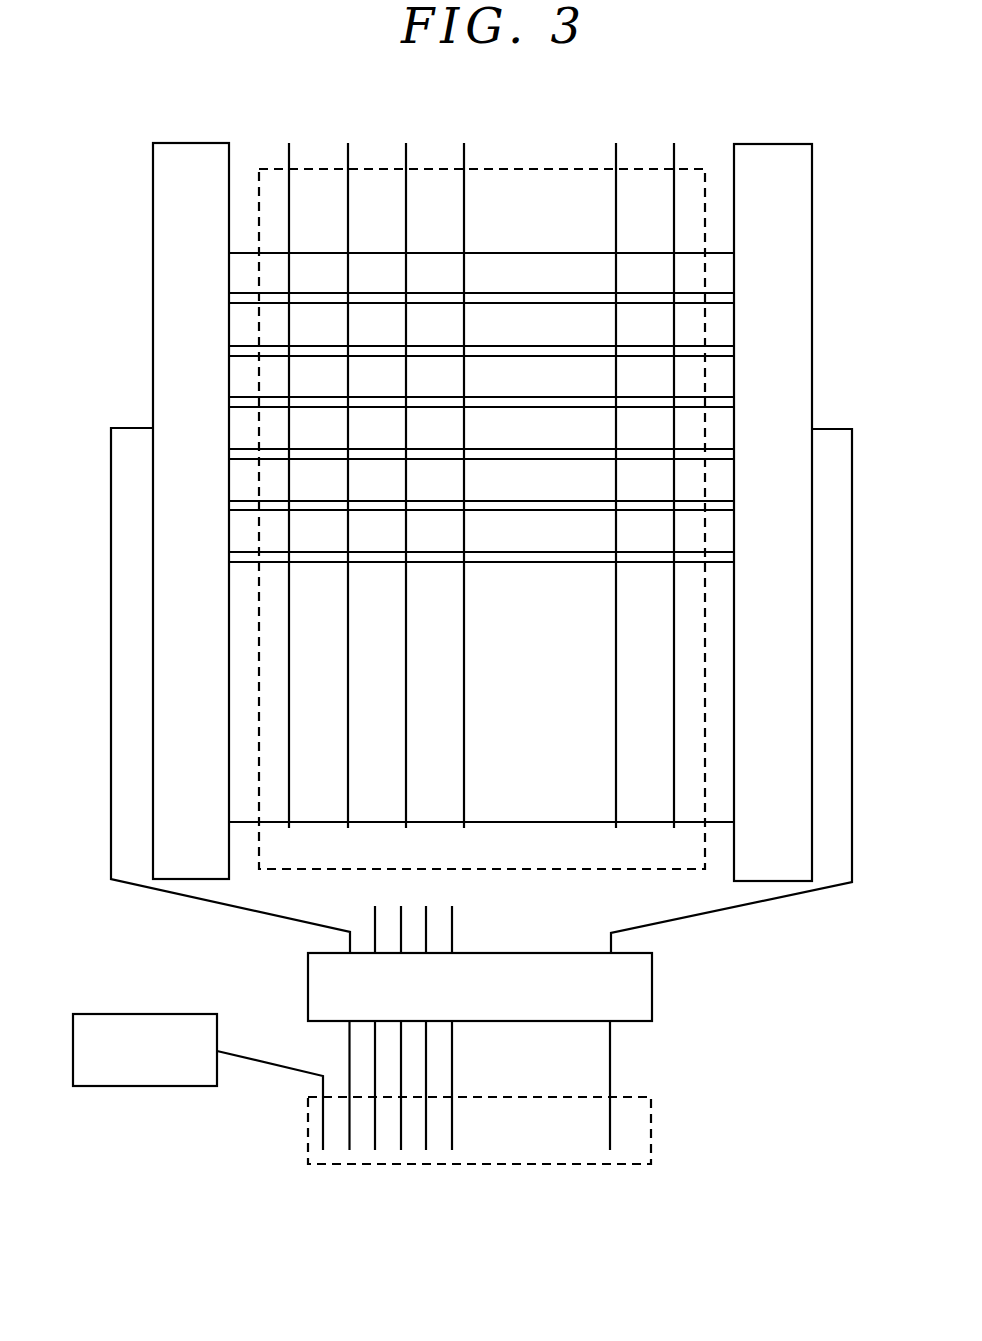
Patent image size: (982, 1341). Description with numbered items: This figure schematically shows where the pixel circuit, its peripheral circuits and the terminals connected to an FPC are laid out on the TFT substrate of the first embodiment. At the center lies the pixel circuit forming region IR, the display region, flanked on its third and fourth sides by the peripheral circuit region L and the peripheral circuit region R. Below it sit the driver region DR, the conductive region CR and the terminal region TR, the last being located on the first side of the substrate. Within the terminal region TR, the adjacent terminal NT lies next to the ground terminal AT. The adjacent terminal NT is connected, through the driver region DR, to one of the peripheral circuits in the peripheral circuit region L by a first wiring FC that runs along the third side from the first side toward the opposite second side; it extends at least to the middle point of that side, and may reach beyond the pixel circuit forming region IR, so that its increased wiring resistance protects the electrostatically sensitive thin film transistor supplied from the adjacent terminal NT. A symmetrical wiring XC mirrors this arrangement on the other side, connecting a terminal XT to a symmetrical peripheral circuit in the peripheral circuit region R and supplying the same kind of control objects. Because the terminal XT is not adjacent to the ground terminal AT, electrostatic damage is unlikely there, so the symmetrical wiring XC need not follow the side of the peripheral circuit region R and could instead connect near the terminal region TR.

The pixel circuit forming region IR is at (517, 169).
The peripheral circuit region L is at (191, 511).
The peripheral circuit region R is at (773, 512).
The first wiring FC is at (111, 669).
The symmetrical wiring XC is at (746, 905).
The driver region DR is at (480, 963).
The conductive region CR is at (145, 1050).
The ground terminal AT is at (322, 1127).
The adjacent terminal NT is at (348, 1132).
The terminal region TR is at (493, 1165).
The terminal XT is at (612, 1128).